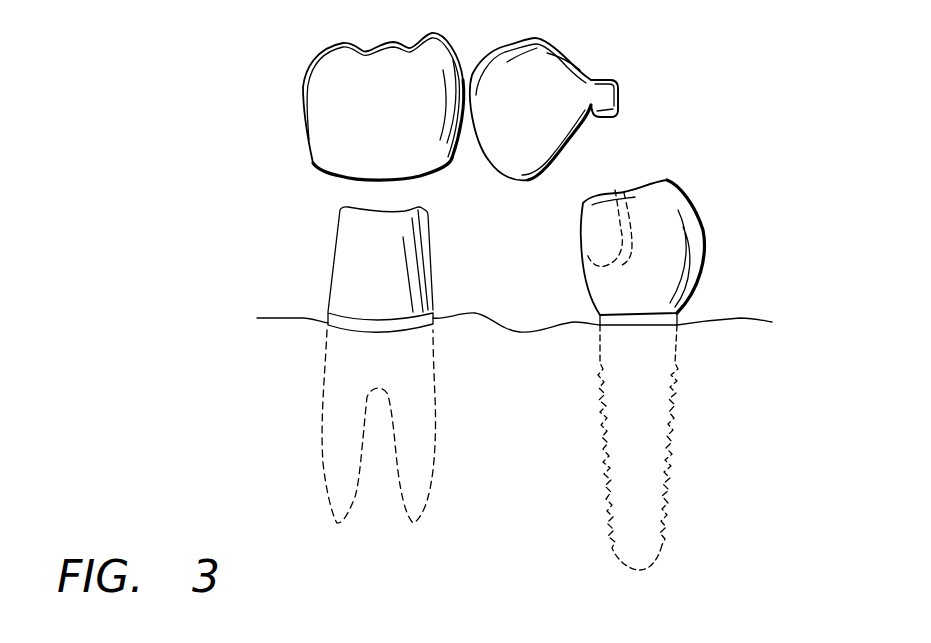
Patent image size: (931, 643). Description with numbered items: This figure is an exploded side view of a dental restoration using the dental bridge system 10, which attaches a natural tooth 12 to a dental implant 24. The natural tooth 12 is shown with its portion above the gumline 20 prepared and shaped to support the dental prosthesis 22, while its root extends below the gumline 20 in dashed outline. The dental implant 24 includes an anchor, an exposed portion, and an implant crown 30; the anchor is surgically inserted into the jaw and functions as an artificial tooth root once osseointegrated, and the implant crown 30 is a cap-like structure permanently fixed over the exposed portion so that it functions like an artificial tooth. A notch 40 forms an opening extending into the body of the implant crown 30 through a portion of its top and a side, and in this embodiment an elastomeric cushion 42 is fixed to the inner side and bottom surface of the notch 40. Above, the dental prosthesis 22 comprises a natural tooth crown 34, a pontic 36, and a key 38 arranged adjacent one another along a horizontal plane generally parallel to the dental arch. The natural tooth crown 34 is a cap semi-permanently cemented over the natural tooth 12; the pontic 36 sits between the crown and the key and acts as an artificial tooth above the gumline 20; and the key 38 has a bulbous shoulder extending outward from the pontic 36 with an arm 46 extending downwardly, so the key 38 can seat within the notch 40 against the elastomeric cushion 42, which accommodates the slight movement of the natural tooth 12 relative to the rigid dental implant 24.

The dental bridge system 10 is at (697, 80).
The natural tooth 12 is at (350, 265).
The gumline 20 is at (746, 322).
The dental prosthesis 22 is at (452, 31).
The dental implant 24 is at (746, 248).
The implant crown 30 is at (667, 285).
The natural tooth crown 34 is at (318, 103).
The pontic 36 is at (545, 68).
The key 38 is at (592, 90).
The notch 40 is at (627, 223).
The elastomeric cushion 42 is at (618, 193).
The arm 46 is at (616, 110).